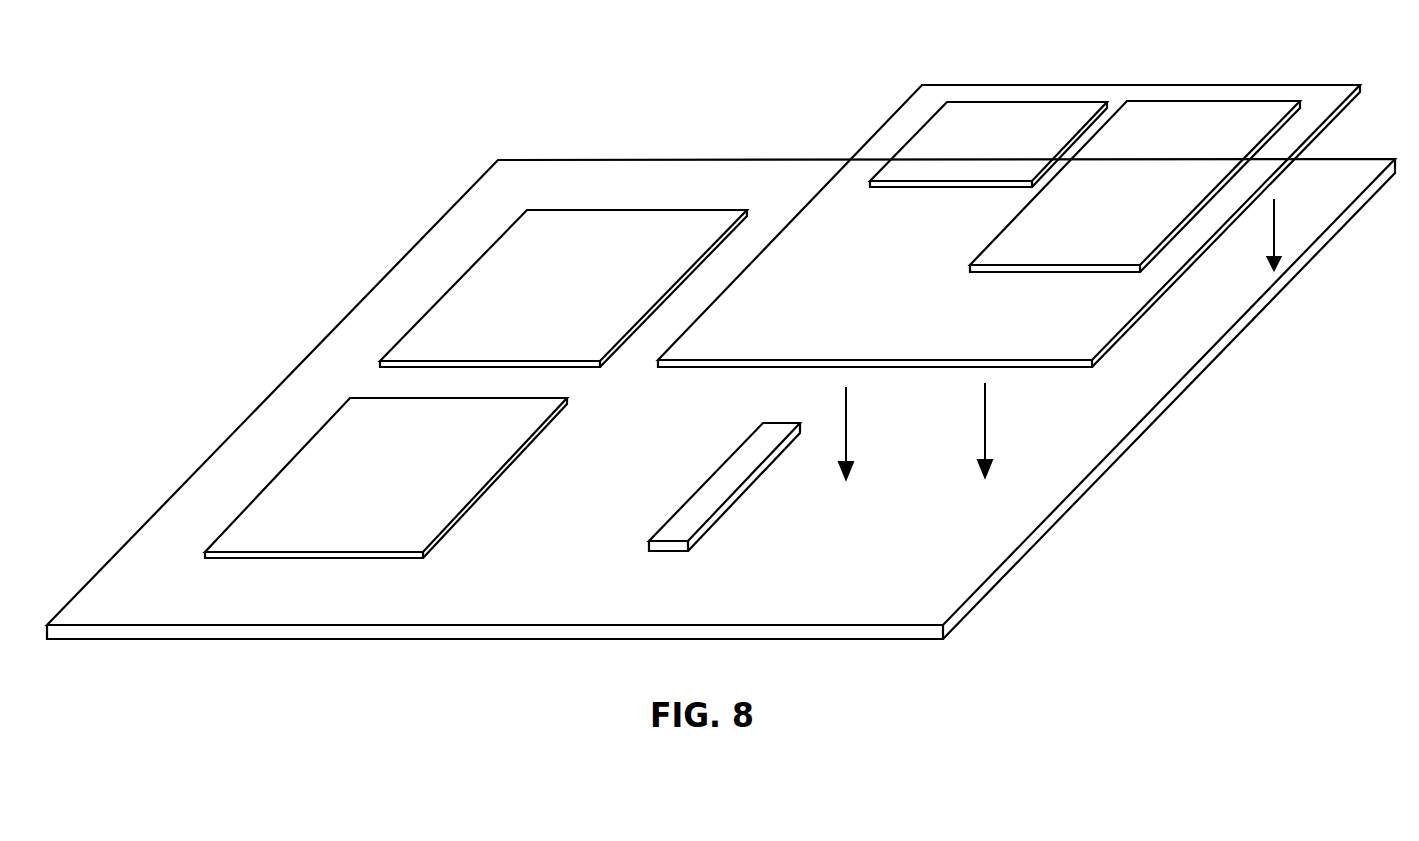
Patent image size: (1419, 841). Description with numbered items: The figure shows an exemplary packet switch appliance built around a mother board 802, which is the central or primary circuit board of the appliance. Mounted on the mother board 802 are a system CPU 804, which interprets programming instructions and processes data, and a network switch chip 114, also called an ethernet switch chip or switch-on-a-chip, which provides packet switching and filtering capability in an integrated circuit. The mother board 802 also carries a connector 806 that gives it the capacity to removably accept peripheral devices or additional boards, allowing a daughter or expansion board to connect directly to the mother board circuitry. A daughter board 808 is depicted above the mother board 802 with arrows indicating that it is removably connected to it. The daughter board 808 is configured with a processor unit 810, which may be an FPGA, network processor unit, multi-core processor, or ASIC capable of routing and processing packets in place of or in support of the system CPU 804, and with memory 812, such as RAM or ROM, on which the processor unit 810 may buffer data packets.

The mother board 802 is at (523, 576).
The system central processing unit 804 is at (540, 269).
The connector 806 is at (700, 483).
The daughter board 808 is at (926, 316).
The processor unit 810 is at (963, 137).
The memory 812 is at (1117, 167).
The network switch chip 114 is at (369, 454).